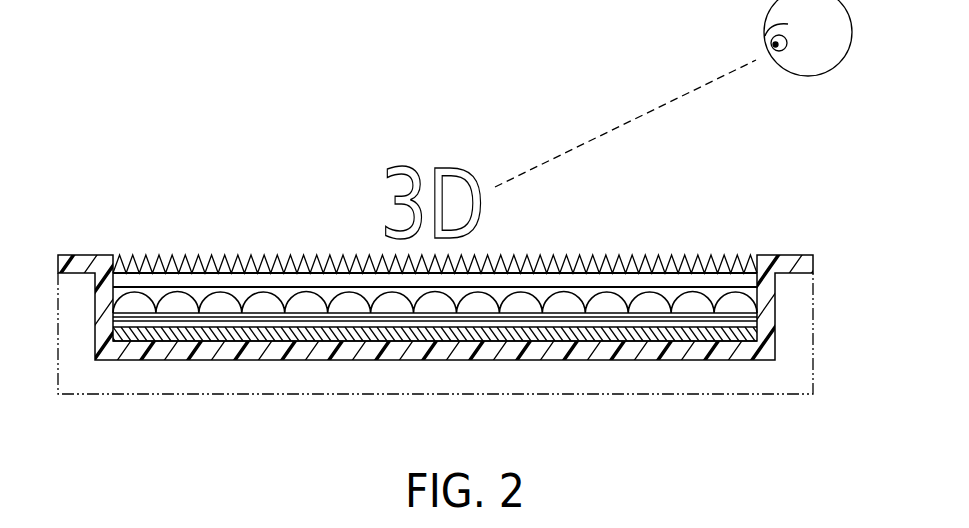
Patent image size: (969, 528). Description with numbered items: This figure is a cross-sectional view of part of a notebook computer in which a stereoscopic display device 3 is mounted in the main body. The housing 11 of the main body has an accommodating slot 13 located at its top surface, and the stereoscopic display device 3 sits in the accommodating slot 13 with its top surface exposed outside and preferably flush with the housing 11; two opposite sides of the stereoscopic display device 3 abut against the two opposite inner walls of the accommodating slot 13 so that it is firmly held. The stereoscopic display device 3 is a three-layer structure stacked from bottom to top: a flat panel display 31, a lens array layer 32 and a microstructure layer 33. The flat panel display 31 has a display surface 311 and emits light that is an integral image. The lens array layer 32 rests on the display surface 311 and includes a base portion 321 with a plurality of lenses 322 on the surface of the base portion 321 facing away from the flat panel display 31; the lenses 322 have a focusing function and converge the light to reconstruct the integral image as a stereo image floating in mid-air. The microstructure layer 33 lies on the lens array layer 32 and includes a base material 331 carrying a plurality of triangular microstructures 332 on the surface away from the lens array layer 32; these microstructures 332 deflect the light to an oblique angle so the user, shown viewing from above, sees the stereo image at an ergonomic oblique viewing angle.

The housing 11 is at (84, 269).
The accommodating slot 13 is at (219, 348).
The stereoscopic display device 3 is at (452, 275).
The flat panel display 31 is at (390, 293).
The display surface 311 is at (558, 328).
The lens array layer 32 is at (450, 280).
The base portion 321 is at (748, 318).
The lenses 322 is at (648, 302).
The microstructure layer 33 is at (452, 252).
The base material 331 is at (748, 283).
The microstructures 332 is at (737, 266).